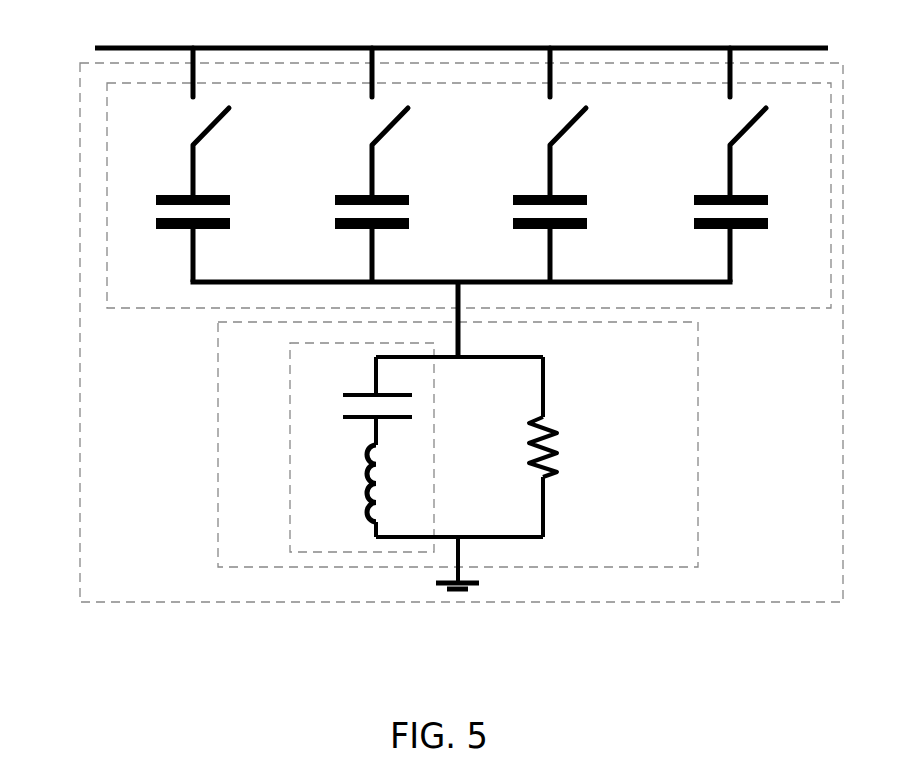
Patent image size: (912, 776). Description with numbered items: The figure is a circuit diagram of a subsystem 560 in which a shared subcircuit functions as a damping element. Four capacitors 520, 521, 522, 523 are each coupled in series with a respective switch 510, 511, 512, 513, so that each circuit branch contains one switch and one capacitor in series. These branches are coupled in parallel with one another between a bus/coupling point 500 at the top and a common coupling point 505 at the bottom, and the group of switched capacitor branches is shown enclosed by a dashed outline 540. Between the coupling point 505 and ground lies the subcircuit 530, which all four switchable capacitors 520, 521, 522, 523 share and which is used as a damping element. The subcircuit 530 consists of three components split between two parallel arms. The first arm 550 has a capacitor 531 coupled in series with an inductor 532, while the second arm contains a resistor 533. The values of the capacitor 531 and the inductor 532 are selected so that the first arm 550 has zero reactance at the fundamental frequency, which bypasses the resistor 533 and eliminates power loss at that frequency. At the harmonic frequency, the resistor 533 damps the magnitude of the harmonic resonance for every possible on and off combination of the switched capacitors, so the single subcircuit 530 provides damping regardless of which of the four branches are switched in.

The bus/coupling point 500 is at (431, 47).
The coupling point 505 is at (695, 287).
The switch 510 is at (214, 127).
The switch 511 is at (393, 127).
The switch 512 is at (569, 127).
The switch 513 is at (748, 127).
The capacitor 520 is at (177, 194).
The capacitor 521 is at (355, 194).
The capacitor 522 is at (534, 194).
The capacitor 523 is at (713, 194).
The subcircuit 530 is at (218, 487).
The capacitor 531 is at (373, 421).
The inductor 532 is at (365, 515).
The resistor 533 is at (548, 477).
The switched capacitor bank 540 is at (166, 309).
The first arm 550 is at (290, 475).
The subsystem 560 is at (80, 485).